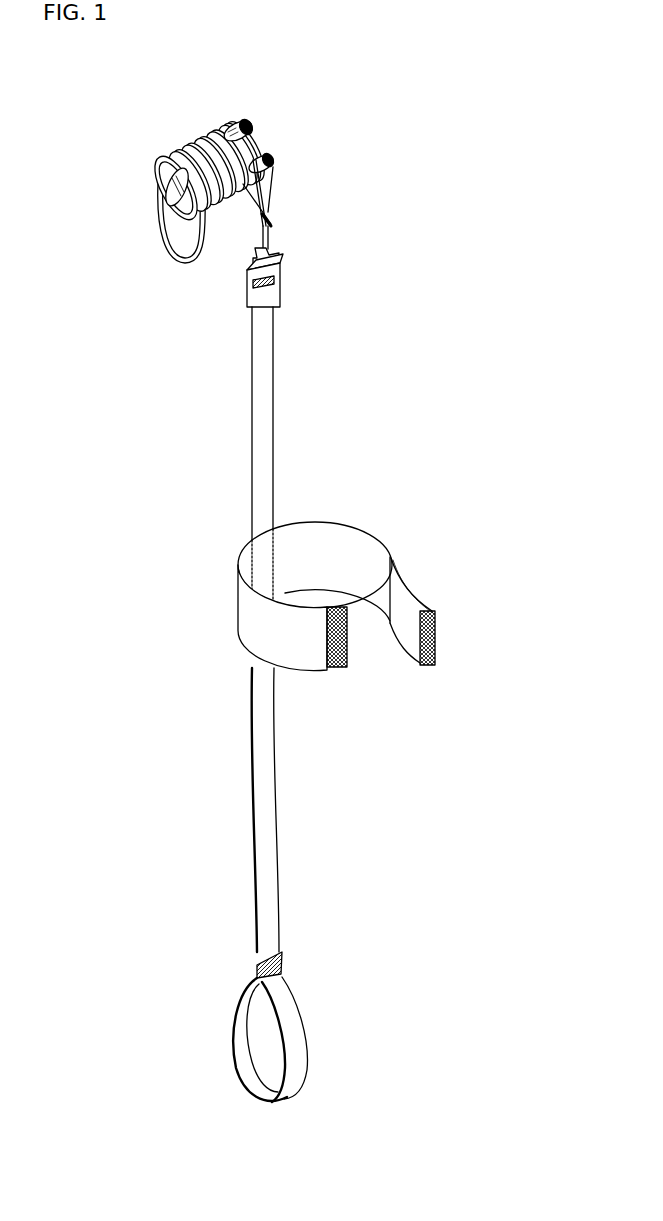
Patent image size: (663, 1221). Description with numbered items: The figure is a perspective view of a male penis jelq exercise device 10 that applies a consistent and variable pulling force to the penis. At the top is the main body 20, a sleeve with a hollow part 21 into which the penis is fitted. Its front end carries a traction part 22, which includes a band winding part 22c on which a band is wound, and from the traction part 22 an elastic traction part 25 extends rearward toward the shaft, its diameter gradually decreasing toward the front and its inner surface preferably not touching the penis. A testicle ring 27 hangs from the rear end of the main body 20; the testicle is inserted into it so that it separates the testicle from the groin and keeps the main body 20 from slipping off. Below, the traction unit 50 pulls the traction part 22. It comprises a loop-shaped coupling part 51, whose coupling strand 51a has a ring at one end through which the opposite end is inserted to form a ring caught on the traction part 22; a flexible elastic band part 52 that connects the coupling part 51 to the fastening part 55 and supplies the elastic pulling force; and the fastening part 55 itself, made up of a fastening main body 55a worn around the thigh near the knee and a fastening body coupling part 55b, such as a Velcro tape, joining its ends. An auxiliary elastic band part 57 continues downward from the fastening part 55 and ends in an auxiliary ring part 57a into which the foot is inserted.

The male penis jelq exercise device 10 is at (480, 180).
The main body 20 is at (213, 196).
The hollow part 21 is at (168, 193).
The traction part 22 is at (220, 120).
The band winding part 22c is at (252, 134).
The elastic traction part 25 is at (205, 150).
The testicle ring 27 is at (173, 258).
The traction unit 50 is at (155, 529).
The coupling part 51 is at (288, 211).
The coupling strand 51a is at (266, 237).
The elastic band part 52 is at (268, 326).
The fastening part 55 is at (336, 600).
The fastening main body 55a is at (375, 562).
The fastening body coupling part 55b is at (381, 674).
The auxiliary elastic band part 57 is at (302, 885).
The auxiliary ring part 57a is at (288, 1020).